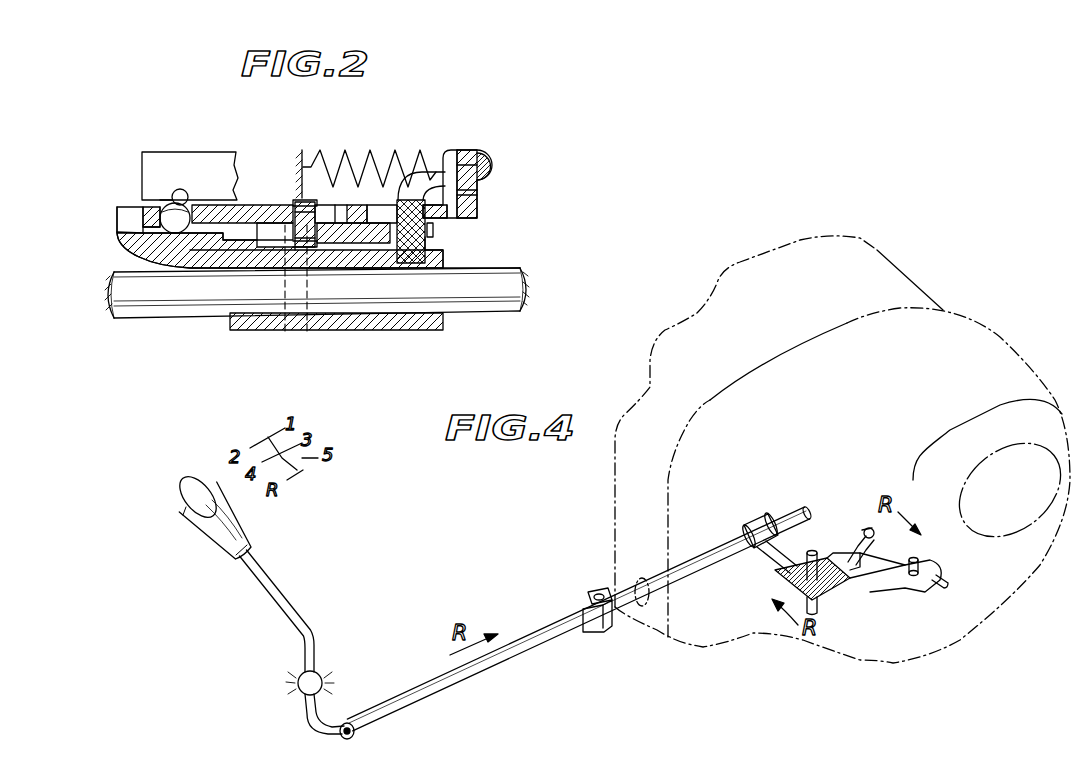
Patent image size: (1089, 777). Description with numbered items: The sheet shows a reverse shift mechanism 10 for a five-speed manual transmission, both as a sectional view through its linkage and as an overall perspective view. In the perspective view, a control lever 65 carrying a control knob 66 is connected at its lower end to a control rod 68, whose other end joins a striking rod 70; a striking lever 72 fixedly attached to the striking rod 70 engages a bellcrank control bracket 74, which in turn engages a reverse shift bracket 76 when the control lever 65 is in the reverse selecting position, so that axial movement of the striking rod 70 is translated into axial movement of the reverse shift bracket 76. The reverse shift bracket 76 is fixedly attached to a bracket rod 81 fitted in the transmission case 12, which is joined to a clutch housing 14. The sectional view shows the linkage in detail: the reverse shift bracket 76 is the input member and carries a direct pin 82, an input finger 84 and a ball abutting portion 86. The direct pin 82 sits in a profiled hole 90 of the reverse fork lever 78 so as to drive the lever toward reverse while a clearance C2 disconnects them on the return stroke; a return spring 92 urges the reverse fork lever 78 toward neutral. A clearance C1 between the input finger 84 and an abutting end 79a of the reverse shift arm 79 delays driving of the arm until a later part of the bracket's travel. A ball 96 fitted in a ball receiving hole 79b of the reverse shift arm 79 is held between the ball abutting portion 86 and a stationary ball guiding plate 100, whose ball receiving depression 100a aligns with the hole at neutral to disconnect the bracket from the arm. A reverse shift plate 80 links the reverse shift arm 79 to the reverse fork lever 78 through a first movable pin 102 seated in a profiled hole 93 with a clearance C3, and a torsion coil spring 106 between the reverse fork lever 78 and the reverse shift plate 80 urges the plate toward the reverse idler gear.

In FIG. 4, the reverse shift mechanism 10 is at (497, 540).
In FIG. 2, the transmission case 12 is at (305, 152).
In FIG. 4, the transmission case 12 is at (1012, 340).
In FIG. 4, the clutch housing 14 is at (880, 240).
In FIG. 4, the control lever 65 is at (282, 622).
In FIG. 4, the control knob 66 is at (188, 488).
In FIG. 4, the control rod 68 is at (537, 632).
In FIG. 4, the striking rod 70 is at (720, 565).
In FIG. 4, the striking lever 72 is at (757, 525).
In FIG. 4, the bellcrank control bracket 74 is at (830, 585).
In FIG. 2, the reverse shift bracket 76 is at (414, 333).
In FIG. 4, the reverse shift bracket 76 is at (893, 565).
In FIG. 2, the reverse fork lever 78 is at (490, 199).
In FIG. 2, the reverse shift arm 79 is at (252, 200).
In FIG. 2, the abutting end 79a is at (142, 218).
In FIG. 2, the ball receiving hole 79b is at (172, 190).
In FIG. 2, the reverse shift plate 80 is at (340, 218).
In FIG. 2, the bracket rod 81 is at (500, 270).
In FIG. 4, the bracket rod 81 is at (946, 590).
In FIG. 2, the direct pin 82 is at (434, 228).
In FIG. 4, the direct pin 82 is at (918, 562).
In FIG. 2, the input finger 84 is at (128, 206).
In FIG. 4, the input finger 84 is at (865, 532).
In FIG. 2, the ball abutting portion 86 is at (140, 250).
In FIG. 4, the ball abutting portion 86 is at (862, 545).
In FIG. 2, the profiled hole 90 is at (414, 200).
In FIG. 2, the return spring 92 is at (389, 150).
In FIG. 2, the profiled hole 93 is at (294, 206).
In FIG. 2, the ball 96 is at (190, 206).
In FIG. 2, the stationary ball guiding plate 100 is at (190, 152).
In FIG. 2, the ball receiving depression 100a is at (184, 196).
In FIG. 2, the first movable pin 102 is at (307, 200).
In FIG. 2, the torsion coil spring 106 is at (430, 242).
In FIG. 2, the clearance C1 is at (140, 210).
In FIG. 2, the clearance C2 is at (322, 205).
In FIG. 2, the clearance C3 is at (383, 207).